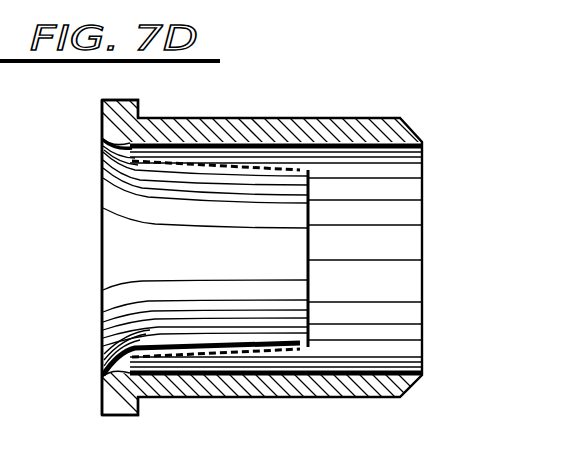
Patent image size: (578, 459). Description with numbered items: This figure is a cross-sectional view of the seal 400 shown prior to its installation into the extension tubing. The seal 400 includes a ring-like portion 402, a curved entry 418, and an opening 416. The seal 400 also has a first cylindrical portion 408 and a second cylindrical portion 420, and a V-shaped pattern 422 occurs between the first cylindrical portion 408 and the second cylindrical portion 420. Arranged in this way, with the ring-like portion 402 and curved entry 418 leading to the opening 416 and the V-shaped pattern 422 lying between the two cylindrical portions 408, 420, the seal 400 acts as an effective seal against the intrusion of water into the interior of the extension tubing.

The seal 400 is at (400, 108).
The ring-like portion 402 is at (137, 100).
The first cylindrical portion 408 is at (384, 147).
The opening 416 is at (228, 269).
The curved entry 418 is at (108, 153).
The second cylindrical portion 420 is at (135, 335).
The V-shaped pattern 422 is at (173, 377).